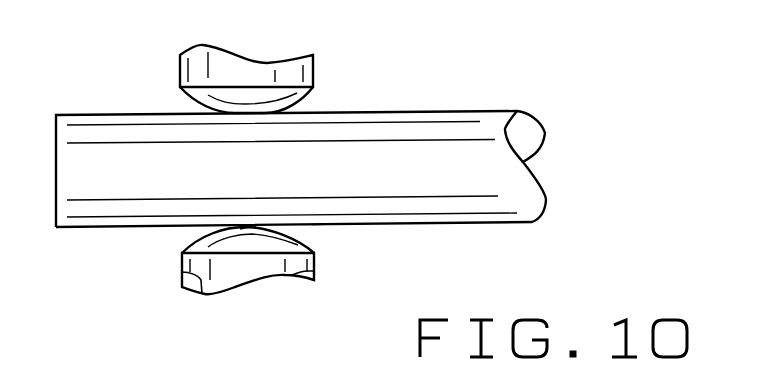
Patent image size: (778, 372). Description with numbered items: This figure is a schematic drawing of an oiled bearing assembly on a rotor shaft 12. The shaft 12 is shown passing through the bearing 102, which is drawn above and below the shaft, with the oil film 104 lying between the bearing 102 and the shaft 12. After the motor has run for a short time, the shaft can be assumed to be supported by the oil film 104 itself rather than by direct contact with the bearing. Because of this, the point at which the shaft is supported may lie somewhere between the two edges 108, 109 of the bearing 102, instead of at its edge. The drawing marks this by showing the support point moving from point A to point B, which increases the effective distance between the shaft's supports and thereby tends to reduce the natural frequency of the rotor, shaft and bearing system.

The bar 12 is at (117, 227).
The bearing 102 is at (313, 73).
The oil film 104 is at (303, 97).
The edge of the bearing 108 is at (203, 294).
The edge of the bearing 109 is at (294, 277).
The point A is at (318, 224).
The point B is at (252, 225).